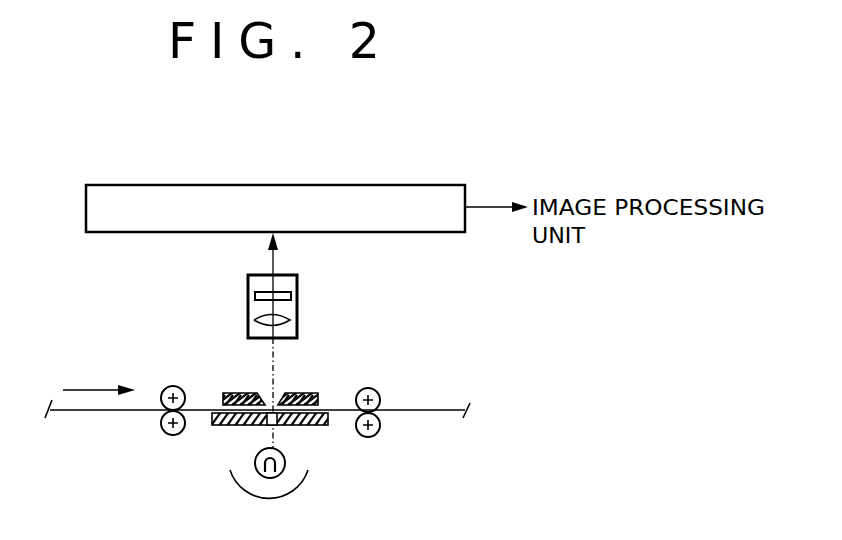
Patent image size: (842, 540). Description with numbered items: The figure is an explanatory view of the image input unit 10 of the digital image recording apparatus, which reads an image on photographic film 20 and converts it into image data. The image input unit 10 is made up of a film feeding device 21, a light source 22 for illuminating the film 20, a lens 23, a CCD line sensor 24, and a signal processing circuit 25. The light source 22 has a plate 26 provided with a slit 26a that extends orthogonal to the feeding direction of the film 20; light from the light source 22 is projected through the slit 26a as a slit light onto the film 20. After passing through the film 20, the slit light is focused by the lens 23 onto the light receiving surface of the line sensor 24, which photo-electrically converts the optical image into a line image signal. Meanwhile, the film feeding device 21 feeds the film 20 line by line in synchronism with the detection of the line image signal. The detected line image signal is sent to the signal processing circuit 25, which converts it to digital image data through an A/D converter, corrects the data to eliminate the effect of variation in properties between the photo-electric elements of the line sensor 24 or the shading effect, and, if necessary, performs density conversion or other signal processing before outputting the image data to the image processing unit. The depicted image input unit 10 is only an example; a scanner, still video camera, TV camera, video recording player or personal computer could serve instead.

The image input unit 10 is at (205, 302).
The photographic film 20 is at (151, 410).
The film feeding device 21 is at (376, 390).
The light source 22 is at (281, 467).
The lens 23 is at (297, 315).
The CCD line sensor 24 is at (297, 293).
The signal processing circuit 25 is at (272, 185).
The plate 26 is at (300, 427).
The slit 26a is at (268, 426).